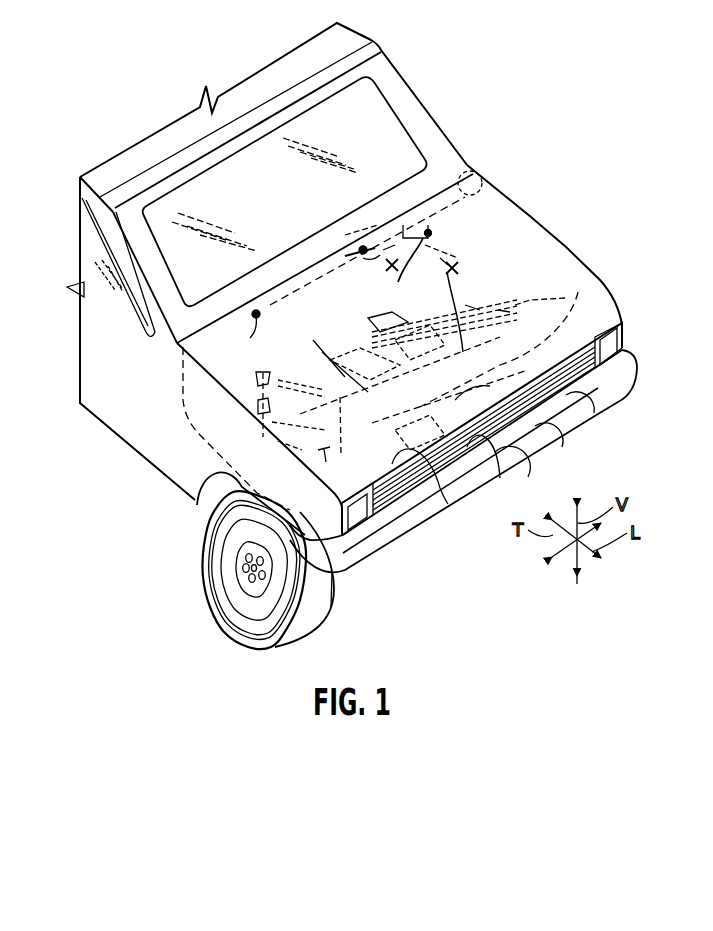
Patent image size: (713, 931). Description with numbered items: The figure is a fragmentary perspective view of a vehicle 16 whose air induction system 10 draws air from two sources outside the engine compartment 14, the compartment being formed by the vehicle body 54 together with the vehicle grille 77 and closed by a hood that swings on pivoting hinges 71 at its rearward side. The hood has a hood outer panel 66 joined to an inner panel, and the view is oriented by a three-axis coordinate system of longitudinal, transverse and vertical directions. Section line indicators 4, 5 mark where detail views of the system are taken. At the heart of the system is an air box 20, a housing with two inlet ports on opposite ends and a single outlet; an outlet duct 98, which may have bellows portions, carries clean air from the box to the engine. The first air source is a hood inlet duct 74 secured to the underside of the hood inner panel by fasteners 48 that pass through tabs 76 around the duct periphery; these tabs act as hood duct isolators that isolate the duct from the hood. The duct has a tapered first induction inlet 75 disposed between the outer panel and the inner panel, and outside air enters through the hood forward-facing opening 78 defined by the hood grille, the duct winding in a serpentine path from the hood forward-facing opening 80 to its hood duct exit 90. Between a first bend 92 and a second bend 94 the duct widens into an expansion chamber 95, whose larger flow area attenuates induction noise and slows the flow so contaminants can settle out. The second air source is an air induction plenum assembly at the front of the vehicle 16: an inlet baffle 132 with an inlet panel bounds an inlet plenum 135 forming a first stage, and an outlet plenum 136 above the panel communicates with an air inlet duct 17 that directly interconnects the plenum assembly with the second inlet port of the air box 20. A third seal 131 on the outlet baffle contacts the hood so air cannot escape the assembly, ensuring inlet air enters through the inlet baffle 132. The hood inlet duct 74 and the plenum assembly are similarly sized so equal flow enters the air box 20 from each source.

The air induction system 10 is at (479, 200).
The engine compartment 14 is at (527, 232).
The vehicle 16 is at (88, 207).
The air inlet duct 17 is at (456, 505).
The air box 20 is at (326, 468).
The fasteners 48 is at (255, 312).
The vehicle body 54 is at (108, 413).
The hood outer panel 66 is at (565, 258).
The pivoting hinges 71 is at (176, 344).
The hood inlet duct 74 is at (412, 233).
The first induction inlet 75 is at (470, 300).
The tabs 76 is at (250, 338).
The vehicle grille 77 is at (528, 476).
The hood forward-facing opening 78 is at (502, 306).
The hood forward-facing opening 80 is at (562, 298).
The hood duct exit 90 is at (242, 388).
The first bend 92 is at (445, 390).
The second bend 94 is at (383, 250).
The expansion chamber 95 is at (445, 255).
The outlet duct 98 is at (362, 326).
The third seal 131 is at (580, 308).
The inlet baffle 132 is at (594, 413).
The inlet plenum 135 is at (562, 447).
The outlet plenum 136 is at (343, 376).
The section line 4 is at (300, 343).
The section line 5 is at (414, 346).